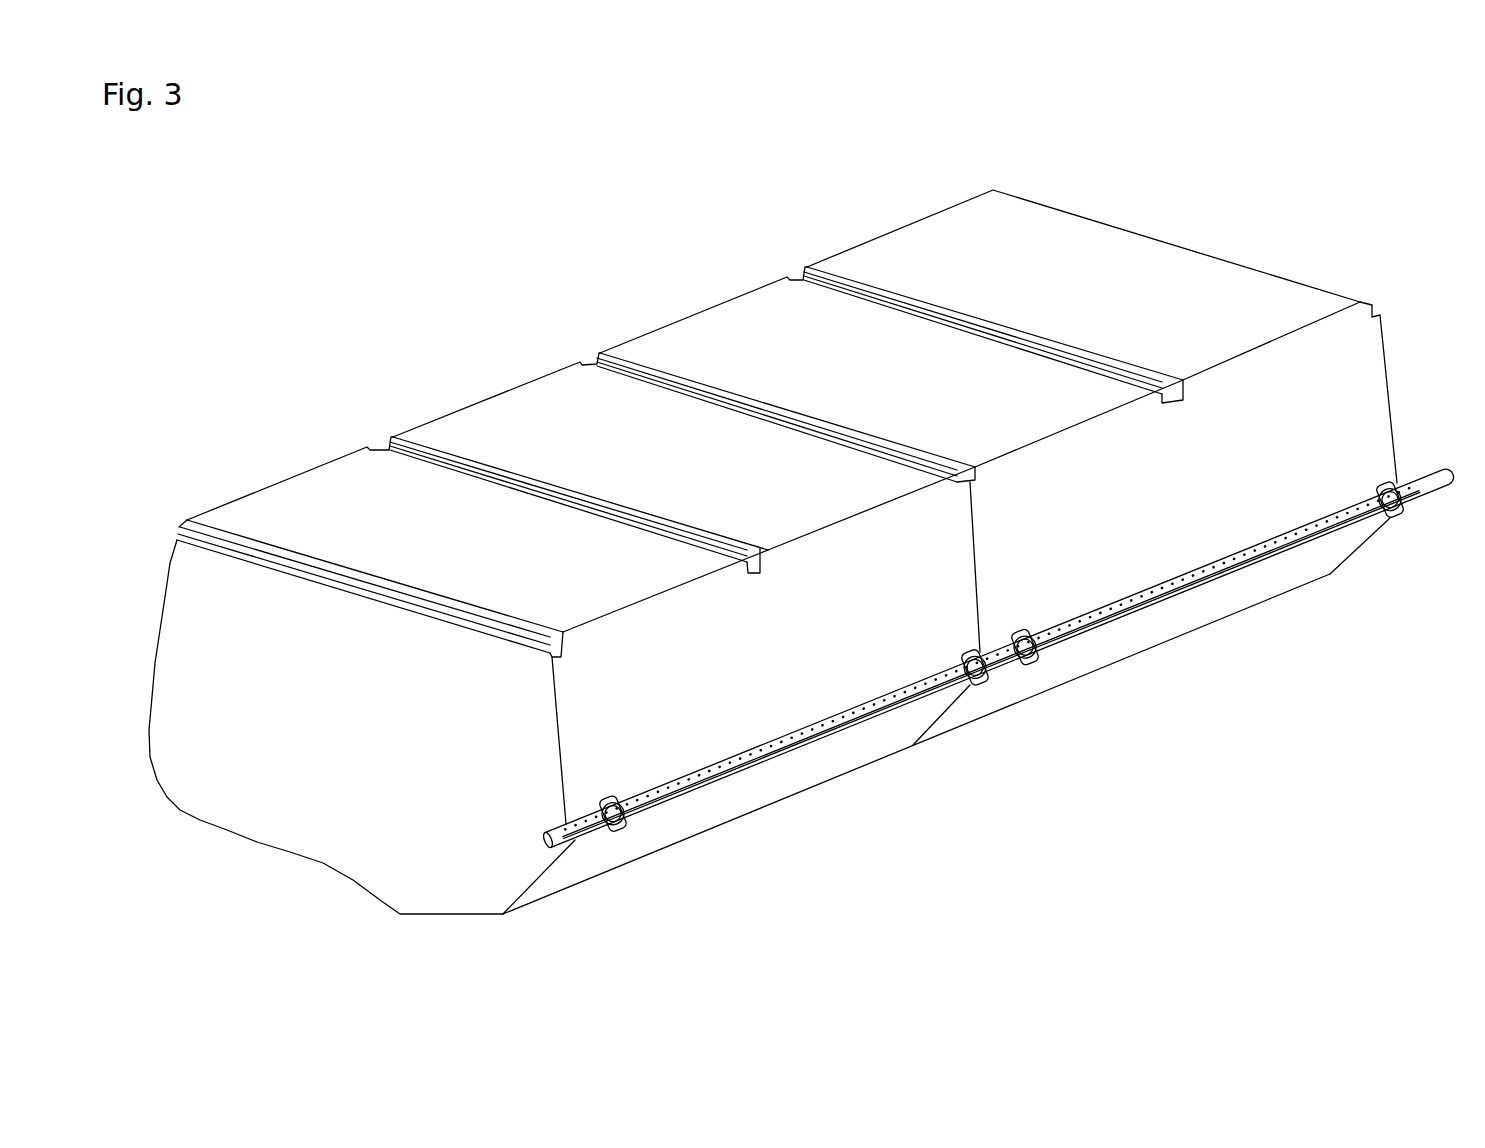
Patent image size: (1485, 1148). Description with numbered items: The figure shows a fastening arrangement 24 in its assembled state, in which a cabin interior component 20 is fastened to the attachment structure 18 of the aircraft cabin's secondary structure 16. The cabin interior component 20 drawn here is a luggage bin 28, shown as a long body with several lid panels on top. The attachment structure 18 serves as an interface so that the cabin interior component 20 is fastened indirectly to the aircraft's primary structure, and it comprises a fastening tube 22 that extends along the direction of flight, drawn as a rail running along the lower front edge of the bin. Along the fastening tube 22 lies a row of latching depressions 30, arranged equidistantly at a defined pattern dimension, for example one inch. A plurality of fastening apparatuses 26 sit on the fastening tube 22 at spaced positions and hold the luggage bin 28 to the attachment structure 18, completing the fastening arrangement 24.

The secondary structure 16 is at (930, 659).
The attachment structure 18 is at (930, 659).
The fastening tube 22 is at (563, 830).
The cabin interior component 20 is at (768, 414).
The fastening arrangement 24 is at (334, 186).
The fastening apparatus 26 is at (621, 862).
The luggage bin 28 is at (494, 396).
The latching depression 30 is at (778, 750).